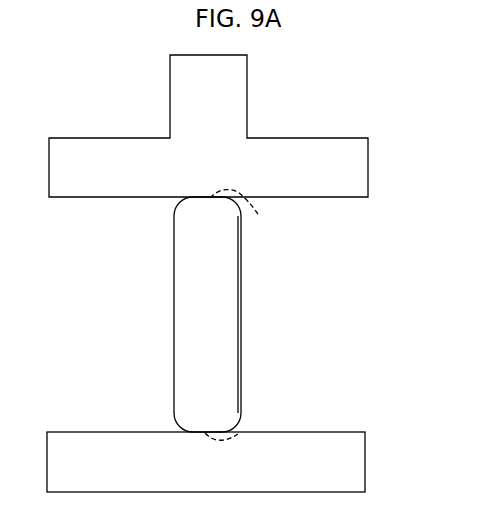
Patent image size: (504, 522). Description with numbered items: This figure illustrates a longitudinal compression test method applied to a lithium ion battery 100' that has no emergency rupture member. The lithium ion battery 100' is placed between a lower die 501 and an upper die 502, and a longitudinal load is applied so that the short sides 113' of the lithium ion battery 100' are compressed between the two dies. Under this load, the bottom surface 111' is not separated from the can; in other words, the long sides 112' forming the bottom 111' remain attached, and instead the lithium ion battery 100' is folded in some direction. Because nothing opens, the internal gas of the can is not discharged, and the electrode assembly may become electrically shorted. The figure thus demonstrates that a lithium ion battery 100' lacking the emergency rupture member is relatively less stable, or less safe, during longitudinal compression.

The upper die 502 is at (358, 169).
The lower die 501 is at (356, 464).
The lithium ion battery 100' is at (196, 315).
The bottom surface 111' is at (249, 314).
The long sides 112' is at (281, 314).
The short sides 113' is at (265, 315).